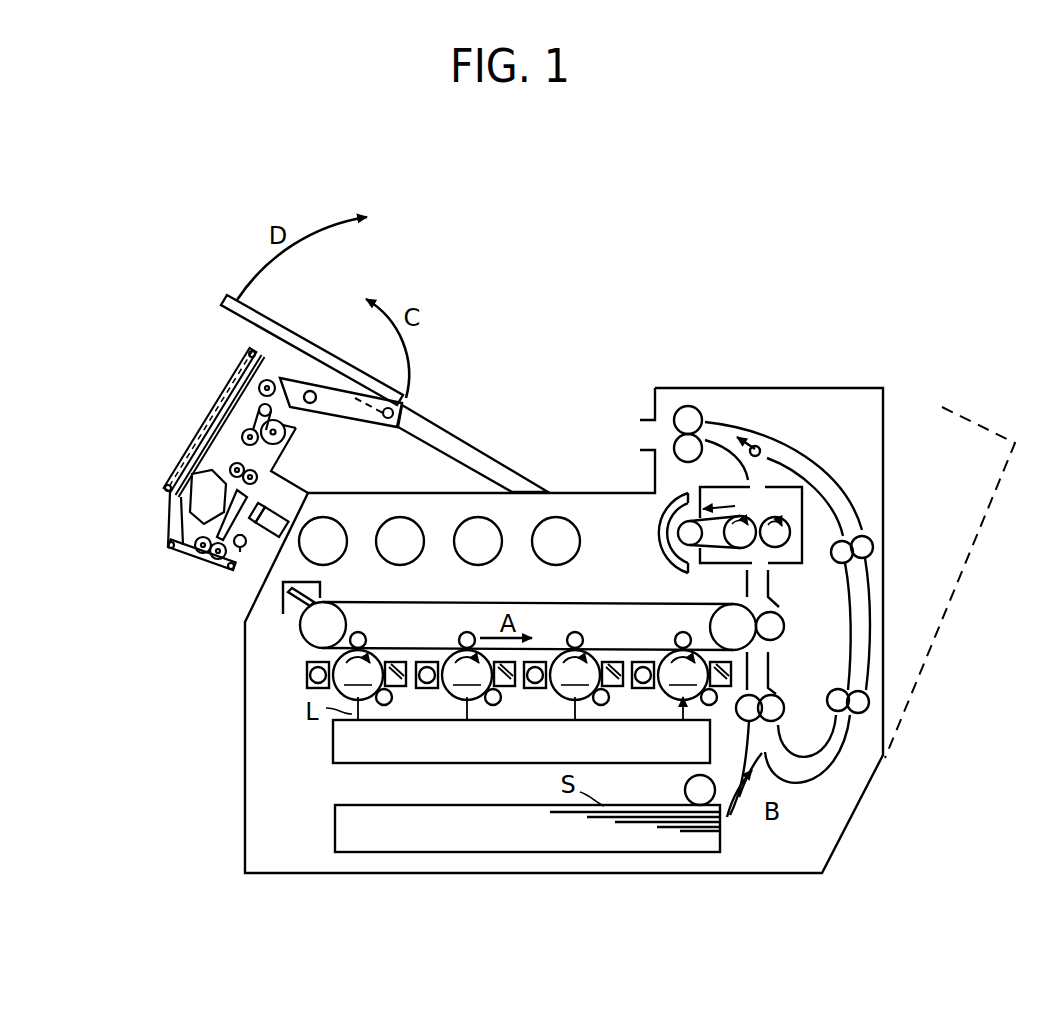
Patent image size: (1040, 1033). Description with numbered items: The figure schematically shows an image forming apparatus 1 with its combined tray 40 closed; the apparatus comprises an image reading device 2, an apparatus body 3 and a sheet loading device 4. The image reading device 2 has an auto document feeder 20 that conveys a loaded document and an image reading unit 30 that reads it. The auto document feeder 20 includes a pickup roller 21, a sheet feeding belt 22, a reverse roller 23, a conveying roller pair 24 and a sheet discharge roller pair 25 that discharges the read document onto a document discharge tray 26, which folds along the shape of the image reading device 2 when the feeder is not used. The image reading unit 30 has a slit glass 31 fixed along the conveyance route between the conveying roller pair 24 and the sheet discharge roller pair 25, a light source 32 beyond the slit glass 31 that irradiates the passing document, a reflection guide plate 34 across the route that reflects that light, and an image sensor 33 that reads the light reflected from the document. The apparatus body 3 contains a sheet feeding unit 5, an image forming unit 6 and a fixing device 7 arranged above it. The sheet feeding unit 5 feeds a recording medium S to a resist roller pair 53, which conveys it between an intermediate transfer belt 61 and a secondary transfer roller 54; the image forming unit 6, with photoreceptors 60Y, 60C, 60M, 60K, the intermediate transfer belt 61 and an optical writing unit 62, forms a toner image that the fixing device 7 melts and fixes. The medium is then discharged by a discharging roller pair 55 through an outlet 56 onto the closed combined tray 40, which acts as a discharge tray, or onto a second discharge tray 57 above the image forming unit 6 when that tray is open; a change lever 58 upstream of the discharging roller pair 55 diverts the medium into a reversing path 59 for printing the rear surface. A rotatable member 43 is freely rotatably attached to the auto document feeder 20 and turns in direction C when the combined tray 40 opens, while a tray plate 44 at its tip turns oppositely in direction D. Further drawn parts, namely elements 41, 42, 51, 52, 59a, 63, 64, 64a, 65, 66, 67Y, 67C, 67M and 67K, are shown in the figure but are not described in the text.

The image forming apparatus 1 is at (578, 206).
The image reading device 2 is at (62, 392).
The apparatus body 3 is at (808, 330).
The sheet loading device 4 is at (438, 306).
The sheet feeding unit 5 is at (282, 805).
The image forming unit 6 is at (282, 736).
The fixing device 7 is at (804, 498).
The auto document feeder 20 is at (148, 428).
The pickup roller 21 is at (269, 382).
The sheet feeding belt 22 is at (262, 406).
The reverse roller 23 is at (296, 431).
The conveying roller pair 24 is at (207, 441).
The sheet discharge roller pair 25 is at (197, 545).
The document discharge tray 26 is at (162, 525).
The image reading unit 30 is at (249, 562).
The slit glass 31 is at (183, 518).
The light source 32 is at (238, 547).
The image sensor 33 is at (292, 516).
The reflection guide plate 34 is at (183, 463).
The combined tray 40 is at (378, 373).
The cover plate 41 is at (443, 460).
The support arm 42 is at (443, 437).
The rotatable member 43 is at (358, 421).
The tray plate 44 is at (424, 418).
The sheet cassette 51 is at (336, 826).
The pickup roller 52 is at (684, 790).
The resist roller pair 53 is at (777, 700).
The secondary transfer roller 54 is at (785, 627).
The discharging roller pair 55 is at (699, 406).
The outlet 56 is at (648, 419).
The second discharge tray 57 is at (457, 492).
The change lever 58 is at (766, 437).
The reversing path 59 is at (854, 510).
The reverse conveying roller pair 59a is at (870, 543).
The photoreceptor 60Y is at (358, 675).
The photoreceptor 60C is at (467, 675).
The photoreceptor 60M is at (575, 675).
The photoreceptor 60K is at (683, 675).
The intermediate transfer belt 61 is at (607, 602).
The optical writing unit 62 is at (333, 748).
The cleaning roller 63 is at (391, 701).
The process unit 64 is at (293, 689).
The charging device 64a is at (306, 671).
The primary transfer roller 65 is at (367, 637).
The belt cleaning device 66 is at (322, 592).
The toner container (yellow) 67Y is at (343, 524).
The toner container (cyan) 67C is at (420, 524).
The toner container (magenta) 67M is at (498, 524).
The toner container (black) 67K is at (576, 524).